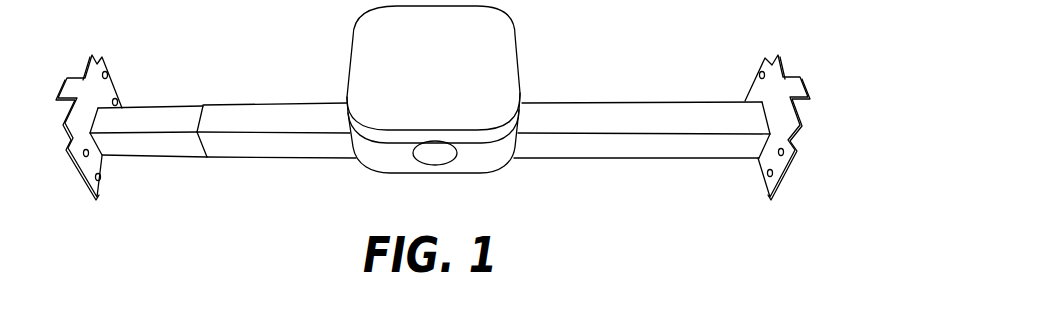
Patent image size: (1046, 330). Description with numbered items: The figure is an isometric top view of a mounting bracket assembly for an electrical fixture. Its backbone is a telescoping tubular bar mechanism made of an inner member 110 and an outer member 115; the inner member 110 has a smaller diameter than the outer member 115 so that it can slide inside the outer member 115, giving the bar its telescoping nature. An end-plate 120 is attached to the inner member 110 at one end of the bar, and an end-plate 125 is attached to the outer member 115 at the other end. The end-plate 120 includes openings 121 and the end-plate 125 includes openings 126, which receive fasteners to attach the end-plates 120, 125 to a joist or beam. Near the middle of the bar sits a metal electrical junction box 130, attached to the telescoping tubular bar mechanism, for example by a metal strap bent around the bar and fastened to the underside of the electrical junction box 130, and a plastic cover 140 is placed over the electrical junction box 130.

The inner member 110 is at (172, 106).
The outer member 115 is at (623, 102).
The end-plate 120 is at (105, 68).
The openings 121 is at (119, 103).
The end-plate 125 is at (782, 62).
The openings 126 is at (759, 75).
The electrical junction box 130 is at (493, 173).
The plastic cover 140 is at (522, 63).